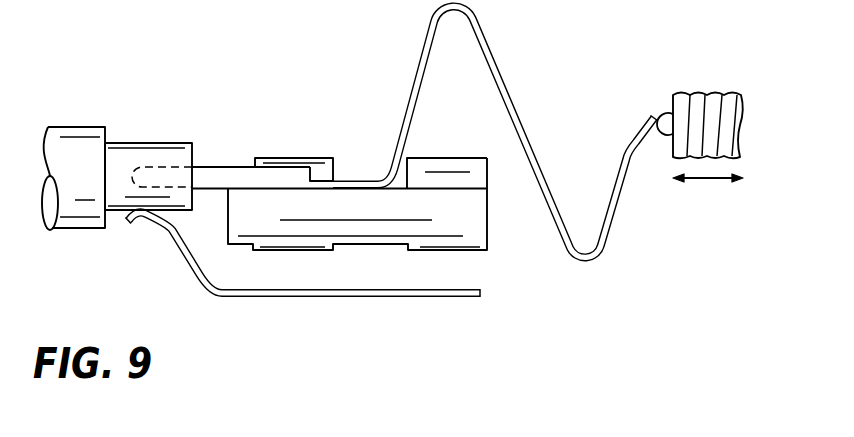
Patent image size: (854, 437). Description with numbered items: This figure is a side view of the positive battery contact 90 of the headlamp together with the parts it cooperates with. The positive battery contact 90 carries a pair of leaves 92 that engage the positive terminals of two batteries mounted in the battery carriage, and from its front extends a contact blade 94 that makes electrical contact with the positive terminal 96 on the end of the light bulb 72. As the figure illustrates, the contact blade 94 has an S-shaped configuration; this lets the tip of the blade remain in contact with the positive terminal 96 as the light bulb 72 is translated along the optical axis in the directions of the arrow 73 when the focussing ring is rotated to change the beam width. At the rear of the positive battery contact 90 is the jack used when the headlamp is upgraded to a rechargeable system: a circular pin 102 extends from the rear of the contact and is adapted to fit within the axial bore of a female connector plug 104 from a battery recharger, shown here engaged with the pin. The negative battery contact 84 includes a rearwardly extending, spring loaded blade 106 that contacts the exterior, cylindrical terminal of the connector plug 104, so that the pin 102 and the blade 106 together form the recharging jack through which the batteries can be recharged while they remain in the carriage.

The light bulb 72 is at (698, 95).
The arrow 73 is at (705, 179).
The negative battery contact 84 is at (453, 293).
The positive battery contact 90 is at (370, 251).
The leaves 92 is at (320, 172).
The contact blade 94 is at (495, 58).
The positive terminal 96 is at (668, 112).
The circular pin 102 is at (218, 175).
The female connector plug 104 is at (70, 133).
The spring loaded blade 106 is at (147, 222).